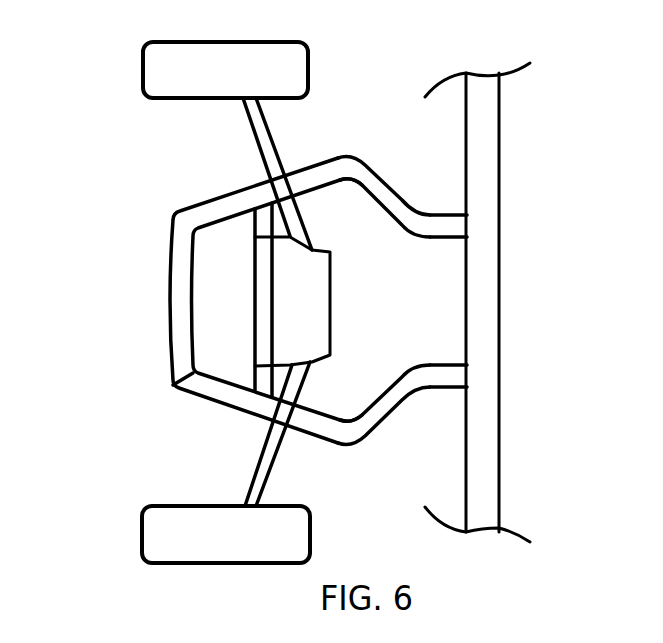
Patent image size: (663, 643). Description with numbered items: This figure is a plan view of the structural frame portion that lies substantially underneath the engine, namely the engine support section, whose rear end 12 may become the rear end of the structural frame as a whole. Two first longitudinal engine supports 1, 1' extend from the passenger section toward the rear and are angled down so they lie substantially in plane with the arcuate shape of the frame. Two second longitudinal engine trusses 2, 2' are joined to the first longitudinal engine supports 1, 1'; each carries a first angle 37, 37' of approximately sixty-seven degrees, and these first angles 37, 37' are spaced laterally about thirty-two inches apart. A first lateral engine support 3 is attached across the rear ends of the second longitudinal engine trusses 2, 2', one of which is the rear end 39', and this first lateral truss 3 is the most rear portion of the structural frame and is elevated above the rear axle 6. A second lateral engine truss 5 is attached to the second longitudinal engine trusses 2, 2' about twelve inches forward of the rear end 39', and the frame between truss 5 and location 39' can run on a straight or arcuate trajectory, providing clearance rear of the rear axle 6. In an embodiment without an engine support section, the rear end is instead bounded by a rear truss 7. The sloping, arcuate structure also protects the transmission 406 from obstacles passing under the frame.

The first longitudinal engine support 1 is at (448, 191).
The first longitudinal engine support 1' is at (448, 409).
The second longitudinal engine truss 2 is at (384, 173).
The second longitudinal engine truss 2' is at (384, 423).
The first lateral engine support 3 is at (180, 266).
The second lateral engine truss 5 is at (260, 378).
The rear axle 6 is at (270, 148).
The rear truss 7 is at (480, 260).
The rear end 12 is at (260, 278).
The first angle 37 is at (356, 218).
The first angle 37' is at (359, 383).
The rear end 39' is at (141, 364).
The transmission 406 is at (312, 307).